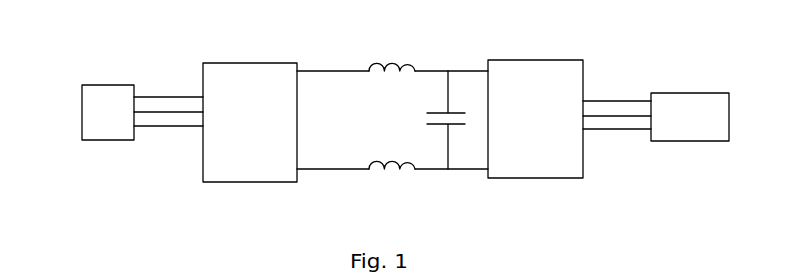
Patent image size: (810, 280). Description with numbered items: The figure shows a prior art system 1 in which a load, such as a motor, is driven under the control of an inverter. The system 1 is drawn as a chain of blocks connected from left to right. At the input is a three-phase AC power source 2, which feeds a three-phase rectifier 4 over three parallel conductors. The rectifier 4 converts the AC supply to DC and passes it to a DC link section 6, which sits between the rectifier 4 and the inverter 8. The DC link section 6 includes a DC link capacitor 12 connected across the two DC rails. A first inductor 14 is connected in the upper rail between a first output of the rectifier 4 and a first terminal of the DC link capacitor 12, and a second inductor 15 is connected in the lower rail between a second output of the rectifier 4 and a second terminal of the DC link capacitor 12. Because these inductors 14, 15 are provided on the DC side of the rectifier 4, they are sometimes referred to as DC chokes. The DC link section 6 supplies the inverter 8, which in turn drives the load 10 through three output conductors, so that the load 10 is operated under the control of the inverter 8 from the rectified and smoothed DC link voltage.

The system 1 is at (404, 130).
The 3-phase AC power source 2 is at (82, 125).
The 3-phase rectifier 4 is at (222, 182).
The DC link section 6 is at (403, 113).
The inverter 8 is at (583, 78).
The load 10 is at (718, 93).
The DC link capacitor 12 is at (458, 125).
The first inductor 14 is at (377, 73).
The second inductor 15 is at (382, 168).